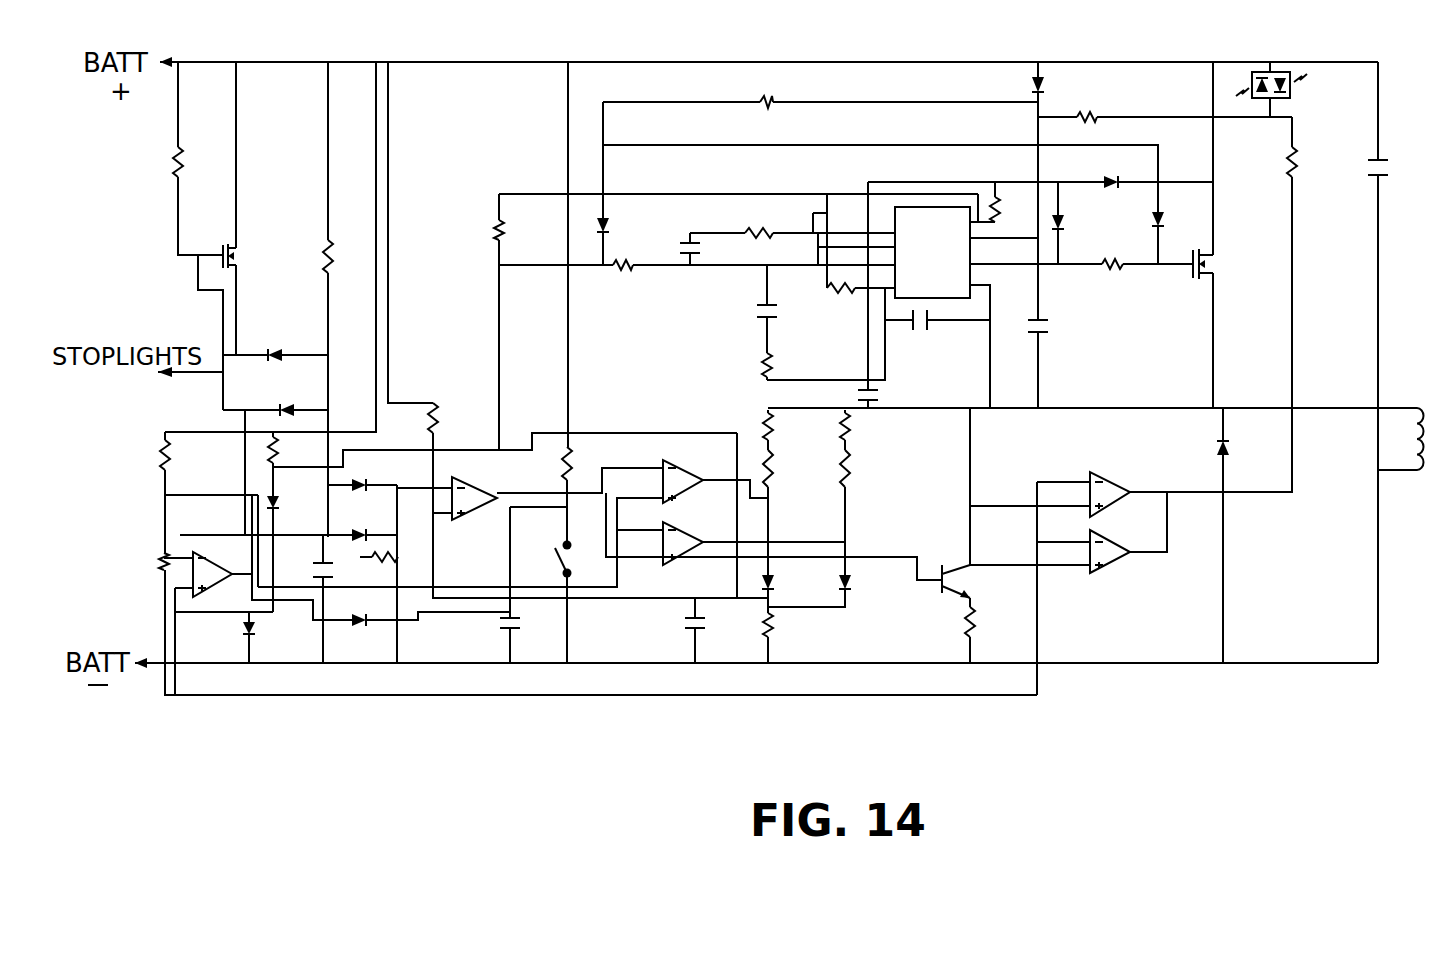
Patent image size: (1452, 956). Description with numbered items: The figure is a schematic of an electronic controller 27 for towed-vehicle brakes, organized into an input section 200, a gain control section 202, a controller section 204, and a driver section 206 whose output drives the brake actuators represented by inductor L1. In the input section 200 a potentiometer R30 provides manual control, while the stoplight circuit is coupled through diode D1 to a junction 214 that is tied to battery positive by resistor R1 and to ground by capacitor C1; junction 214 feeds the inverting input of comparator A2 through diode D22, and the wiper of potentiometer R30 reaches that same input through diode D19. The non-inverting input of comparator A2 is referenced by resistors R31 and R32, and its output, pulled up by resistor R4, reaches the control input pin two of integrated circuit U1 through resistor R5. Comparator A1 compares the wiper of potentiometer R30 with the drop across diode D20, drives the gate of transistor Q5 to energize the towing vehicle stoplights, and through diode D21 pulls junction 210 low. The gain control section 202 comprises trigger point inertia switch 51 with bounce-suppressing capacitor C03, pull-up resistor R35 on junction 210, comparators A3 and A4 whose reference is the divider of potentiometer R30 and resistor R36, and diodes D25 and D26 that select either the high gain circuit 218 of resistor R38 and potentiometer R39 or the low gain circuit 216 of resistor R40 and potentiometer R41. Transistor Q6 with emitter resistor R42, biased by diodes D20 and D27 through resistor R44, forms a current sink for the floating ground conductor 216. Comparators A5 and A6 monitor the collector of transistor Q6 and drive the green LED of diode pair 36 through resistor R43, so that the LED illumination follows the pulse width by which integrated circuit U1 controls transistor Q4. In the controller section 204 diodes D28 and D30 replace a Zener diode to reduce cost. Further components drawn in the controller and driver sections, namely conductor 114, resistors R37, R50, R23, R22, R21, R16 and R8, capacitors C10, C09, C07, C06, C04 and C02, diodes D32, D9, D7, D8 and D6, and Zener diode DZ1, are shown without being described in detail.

The input section 200 is at (292, 50).
The electronic controller 27 is at (388, 43).
The gain control section 202 is at (723, 50).
The controller section 204 is at (1011, 46).
The driver section 206 is at (1271, 46).
The red-green LED pair 36 is at (1300, 104).
The conductor 114 is at (738, 148).
The junction 214 is at (329, 345).
The low gain circuit 216 is at (864, 487).
The high gain circuit 218 is at (778, 488).
The junction 210 is at (566, 494).
The trigger point inertia switch 51 is at (558, 552).
The resistor R37 is at (176, 162).
The transistor Q5 is at (230, 250).
The resistor R1 is at (323, 258).
The diode D1 is at (280, 349).
The diode D32 is at (290, 404).
The resistor R36 is at (163, 466).
The resistor R44 is at (268, 448).
The diode D27 is at (270, 494).
The diode D22 is at (350, 474).
The diode D19 is at (366, 515).
The potentiometer R30 is at (161, 566).
The comparator A1 is at (229, 574).
The capacitor C1 is at (314, 572).
The resistor R50 is at (385, 558).
The diode D20 is at (247, 630).
The diode D21 is at (358, 627).
The capacitor C03 is at (500, 623).
The resistor R31 is at (436, 427).
The comparator A2 is at (487, 513).
The pull-up resistor R35 is at (585, 466).
The comparator A3 is at (700, 458).
The comparator A4 is at (702, 536).
The capacitor C10 is at (685, 623).
The diode D25 is at (760, 580).
The resistor R38 is at (797, 430).
The potentiometer R39 is at (800, 477).
The resistor R40 is at (852, 425).
The potentiometer R41 is at (850, 482).
The diode D26 is at (851, 590).
The resistor R32 is at (772, 630).
The transistor Q6 is at (962, 578).
The emitter resistor R42 is at (966, 624).
The comparator A5 is at (1106, 476).
The comparator A6 is at (1112, 562).
The diode D9 is at (1218, 452).
The inductor L1 is at (1400, 472).
The capacitor C09 is at (1386, 163).
The resistor R43 is at (1288, 170).
The transistor Q4 is at (1214, 253).
The resistor R23 is at (1112, 272).
The capacitor C07 is at (1046, 333).
The diode D7 is at (1063, 228).
The diode D28 is at (1176, 214).
The diode D8 is at (1104, 178).
The diode D6 is at (1044, 79).
The resistor R22 is at (1092, 112).
The resistor R21 is at (1000, 206).
The integrated circuit U1 is at (972, 285).
The capacitor C06 is at (926, 331).
The resistor R16 is at (772, 362).
The capacitor C04 is at (760, 316).
The resistor R8 is at (755, 218).
The capacitor C02 is at (701, 250).
The resistor R5 is at (628, 270).
The pull-up resistor R4 is at (494, 232).
The diode D30 is at (631, 216).
The zener diode DZ1 is at (768, 94).